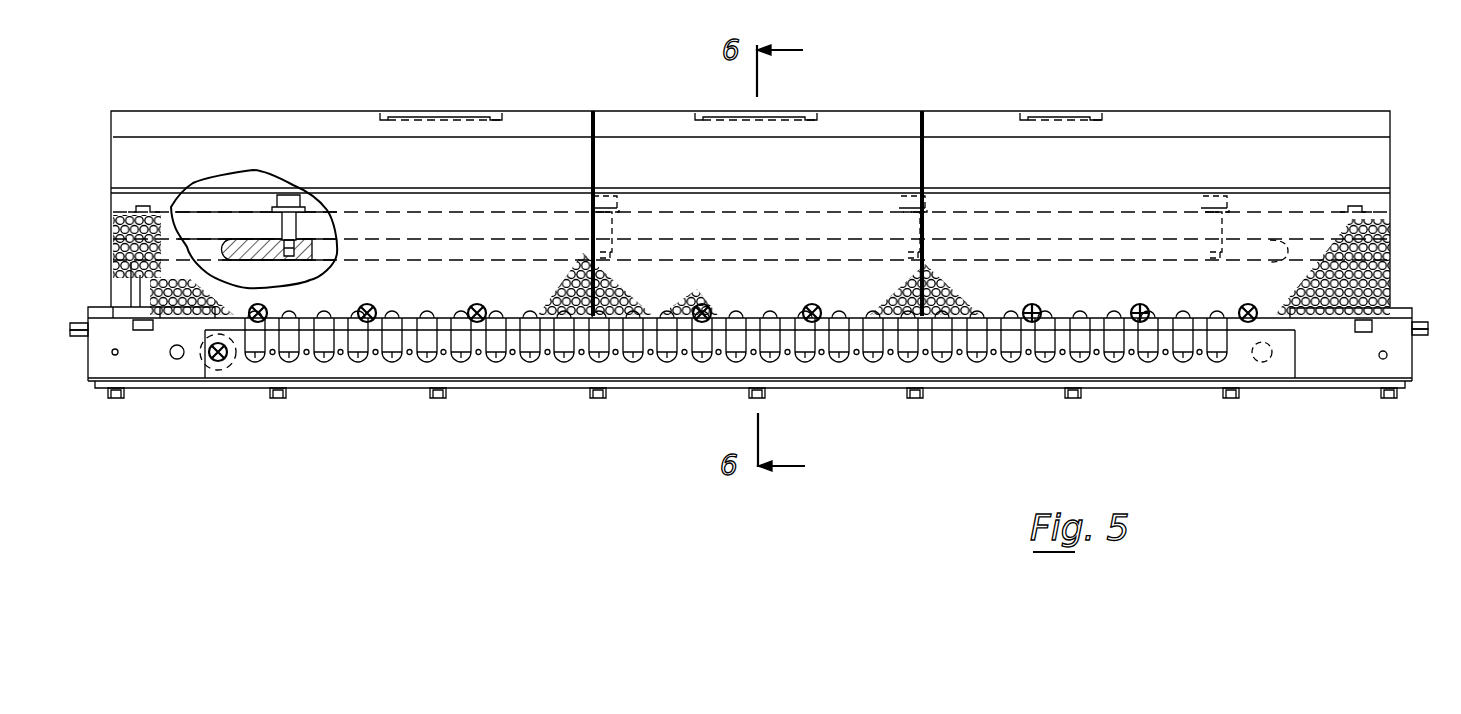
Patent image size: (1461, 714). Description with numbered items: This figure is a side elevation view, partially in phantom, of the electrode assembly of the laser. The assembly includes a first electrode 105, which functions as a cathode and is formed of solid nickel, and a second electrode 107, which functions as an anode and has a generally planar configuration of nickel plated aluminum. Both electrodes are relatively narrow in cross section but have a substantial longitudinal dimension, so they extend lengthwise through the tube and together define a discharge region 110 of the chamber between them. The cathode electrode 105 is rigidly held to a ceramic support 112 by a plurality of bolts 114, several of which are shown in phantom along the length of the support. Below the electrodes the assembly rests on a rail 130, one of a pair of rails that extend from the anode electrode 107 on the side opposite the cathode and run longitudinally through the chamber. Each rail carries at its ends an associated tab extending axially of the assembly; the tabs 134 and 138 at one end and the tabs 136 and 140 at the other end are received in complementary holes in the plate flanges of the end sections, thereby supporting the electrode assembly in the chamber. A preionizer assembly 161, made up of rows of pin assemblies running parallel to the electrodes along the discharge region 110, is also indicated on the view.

The preionizer assembly 161 is at (98, 210).
The second electrode 107 is at (125, 262).
The discharge region 110 is at (234, 266).
The ceramic support 112 is at (222, 222).
The first electrode 105 is at (262, 248).
The bolts 114 is at (292, 205).
The rail 130 is at (340, 368).
The tab 134 is at (76, 338).
The tab 138 is at (68, 322).
The tab 140 is at (1420, 320).
The tab 136 is at (1420, 337).